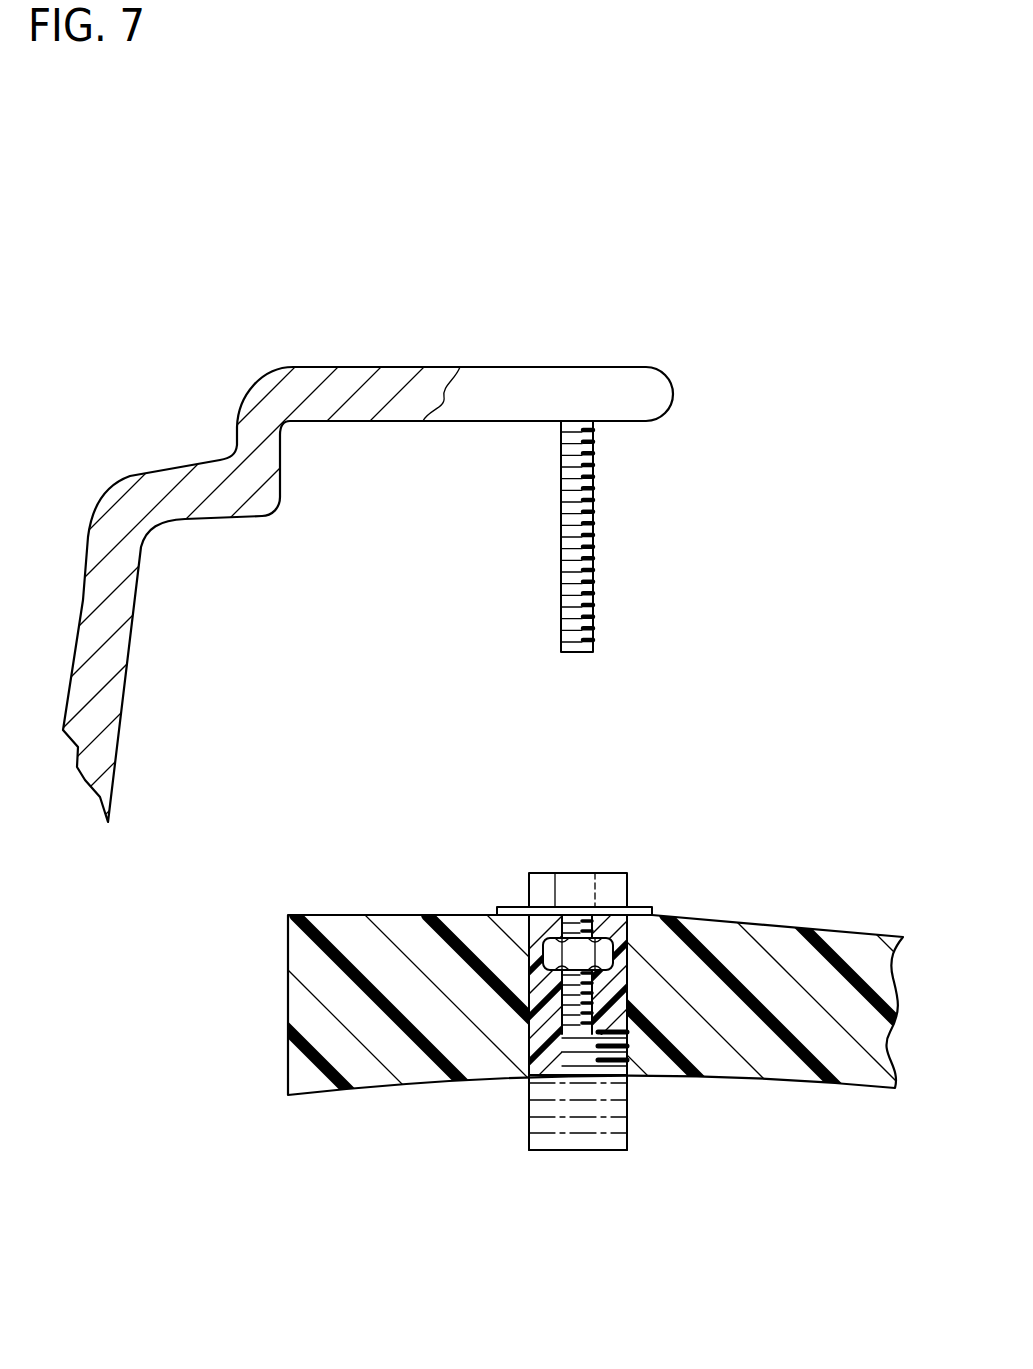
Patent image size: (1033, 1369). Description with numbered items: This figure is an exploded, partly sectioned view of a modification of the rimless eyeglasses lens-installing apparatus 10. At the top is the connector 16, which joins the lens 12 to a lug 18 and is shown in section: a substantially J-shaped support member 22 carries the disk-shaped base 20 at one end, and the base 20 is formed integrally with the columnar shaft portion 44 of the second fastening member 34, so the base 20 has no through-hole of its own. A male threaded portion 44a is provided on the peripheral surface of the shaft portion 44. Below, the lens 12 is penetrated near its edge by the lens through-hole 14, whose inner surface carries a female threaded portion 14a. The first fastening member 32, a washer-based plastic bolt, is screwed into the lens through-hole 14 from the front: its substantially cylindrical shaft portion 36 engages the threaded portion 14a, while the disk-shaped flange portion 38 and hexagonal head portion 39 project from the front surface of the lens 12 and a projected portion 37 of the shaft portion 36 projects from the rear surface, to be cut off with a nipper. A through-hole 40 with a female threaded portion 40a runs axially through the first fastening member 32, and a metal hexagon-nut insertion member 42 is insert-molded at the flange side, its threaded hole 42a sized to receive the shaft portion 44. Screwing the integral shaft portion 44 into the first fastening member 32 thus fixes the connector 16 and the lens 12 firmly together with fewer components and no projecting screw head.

The rimless eyeglasses lens-installing apparatus 10 is at (216, 190).
The lens 12 is at (830, 1050).
The lens through-hole 14 is at (633, 1067).
The threaded portion 14a is at (630, 1057).
The connector 16 is at (673, 366).
The lug 18 is at (138, 503).
The base 20 is at (578, 393).
The support member 22 is at (370, 393).
The first fastening member 32 is at (500, 898).
The second fastening member 34 is at (593, 483).
The shaft portion 36 is at (540, 992).
The projected portion 37 is at (551, 1153).
The flange portion 38 is at (645, 907).
The head portion 39 is at (632, 870).
The through-hole 40 is at (586, 913).
The threaded portion 40a is at (562, 1005).
The insertion member 42 is at (687, 917).
The threaded hole 42a is at (628, 988).
The shaft portion 44 is at (561, 507).
The threaded portion 44a is at (594, 548).